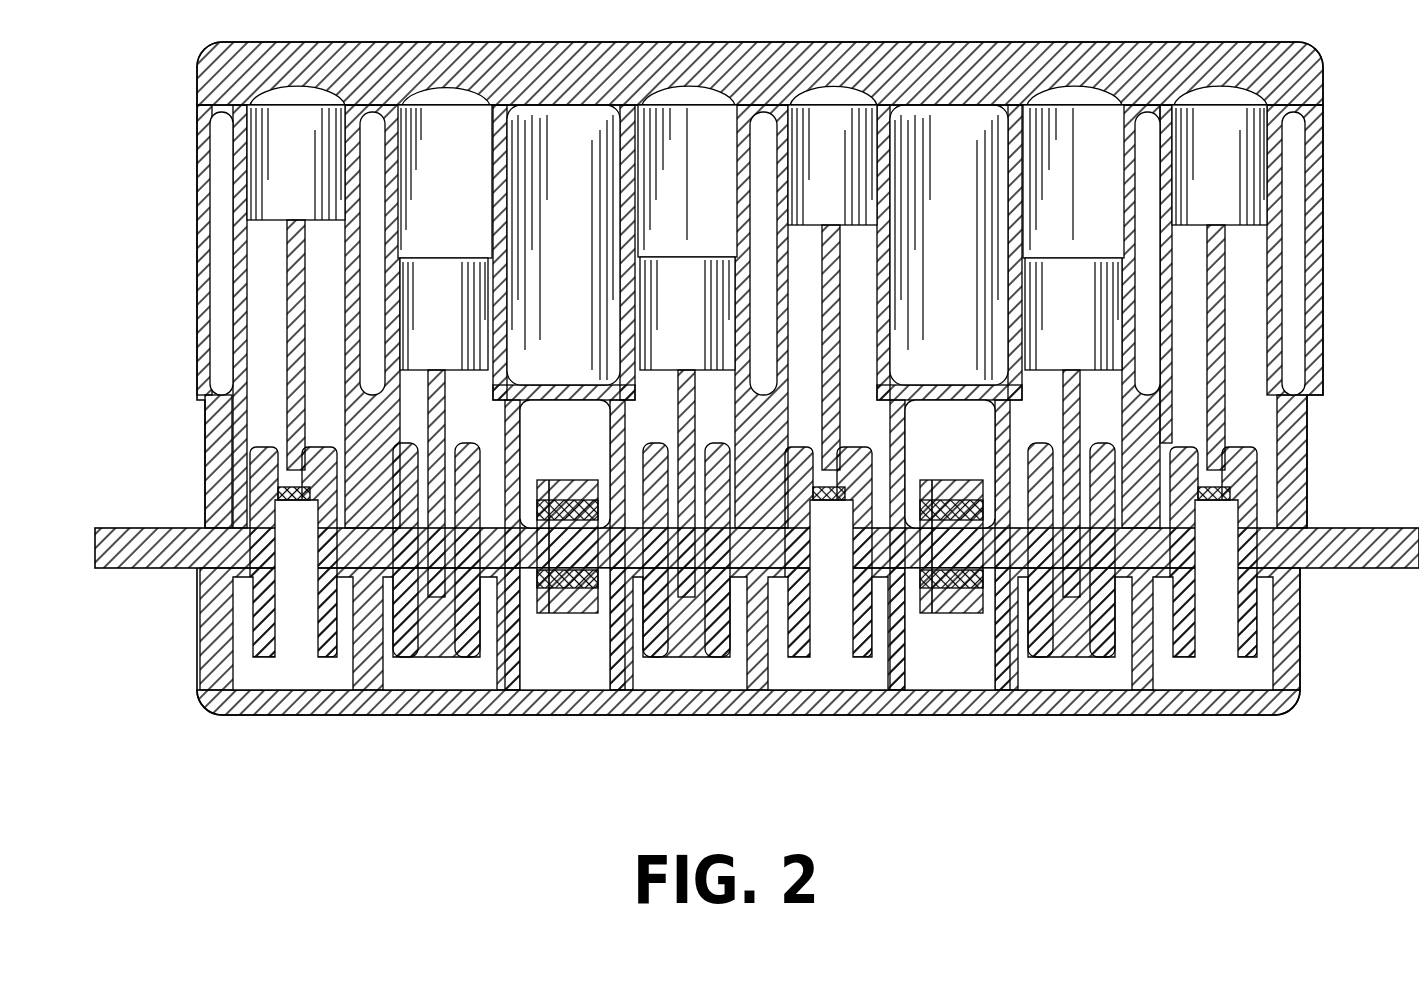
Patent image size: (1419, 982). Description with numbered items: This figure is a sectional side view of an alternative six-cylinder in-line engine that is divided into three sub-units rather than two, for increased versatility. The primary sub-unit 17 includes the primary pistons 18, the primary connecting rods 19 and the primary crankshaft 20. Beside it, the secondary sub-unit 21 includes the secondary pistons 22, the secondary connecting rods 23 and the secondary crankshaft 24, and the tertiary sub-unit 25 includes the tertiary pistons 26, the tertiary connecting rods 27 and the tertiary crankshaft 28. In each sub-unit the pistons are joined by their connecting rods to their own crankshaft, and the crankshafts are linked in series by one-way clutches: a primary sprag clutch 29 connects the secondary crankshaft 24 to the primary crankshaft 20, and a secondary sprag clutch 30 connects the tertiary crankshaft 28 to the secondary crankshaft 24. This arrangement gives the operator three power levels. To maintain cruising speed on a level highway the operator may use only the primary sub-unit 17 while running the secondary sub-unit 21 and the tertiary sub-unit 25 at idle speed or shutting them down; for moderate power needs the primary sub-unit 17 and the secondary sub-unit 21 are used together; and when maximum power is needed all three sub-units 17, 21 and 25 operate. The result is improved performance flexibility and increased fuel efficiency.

The primary sub-unit 17 is at (1192, 665).
The primary pistons 18 is at (1241, 174).
The primary connecting rods 19 is at (1065, 405).
The primary crankshaft 20 is at (1200, 578).
The secondary sub-unit 21 is at (835, 665).
The secondary pistons 22 is at (845, 184).
The secondary connecting rods 23 is at (678, 410).
The secondary crankshaft 24 is at (806, 660).
The tertiary sub-unit 25 is at (396, 668).
The tertiary pistons 26 is at (316, 184).
The tertiary connecting rods 27 is at (288, 402).
The tertiary crankshaft 28 is at (318, 570).
The primary sprag clutch 29 is at (944, 618).
The secondary sprag clutch 30 is at (543, 613).